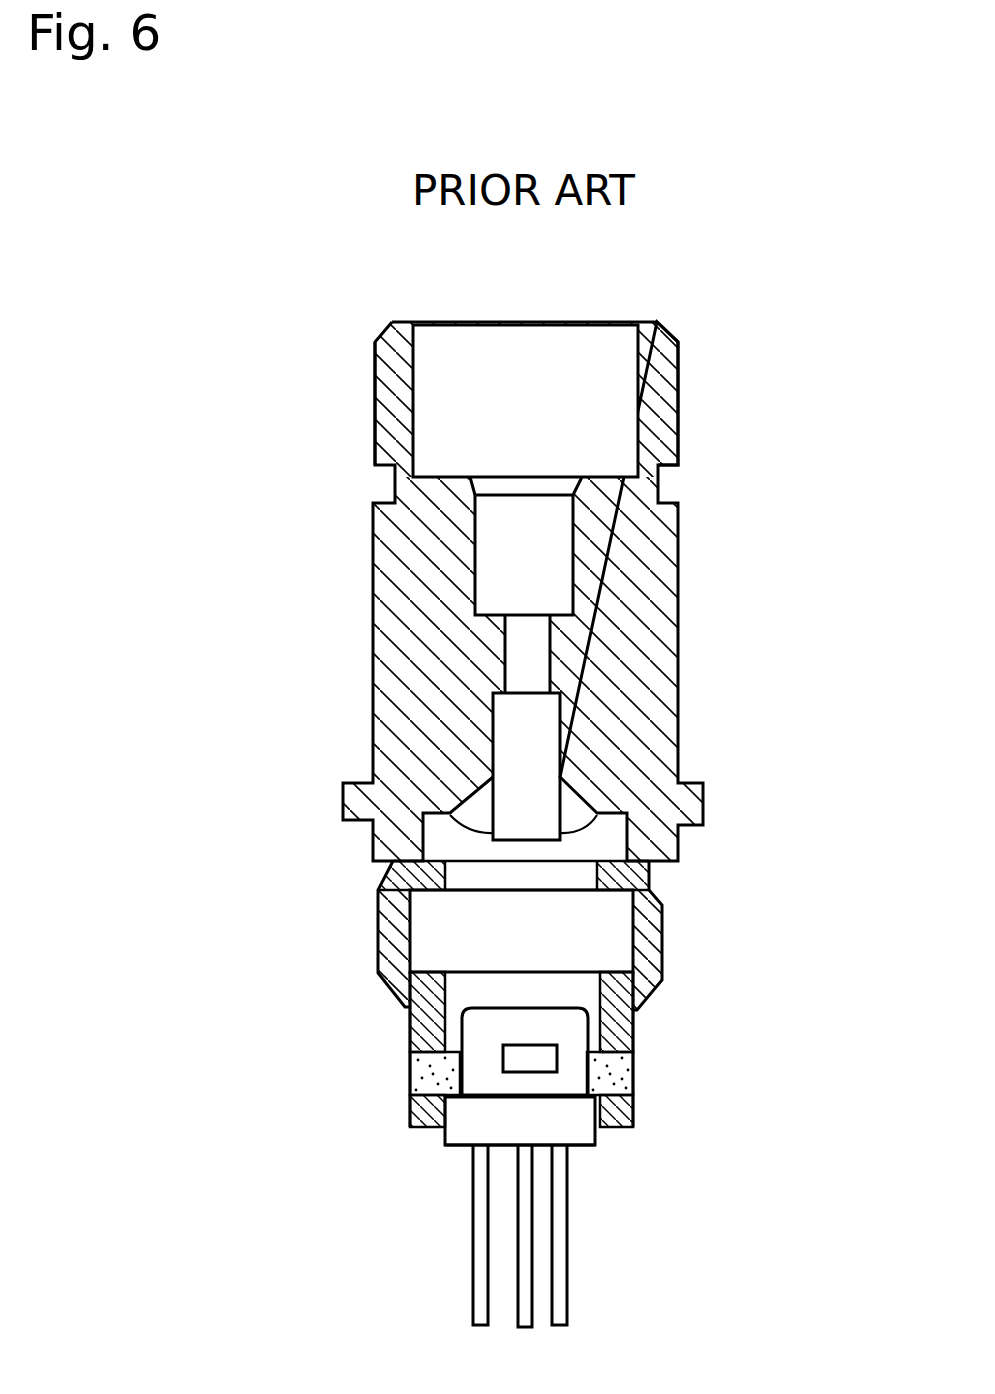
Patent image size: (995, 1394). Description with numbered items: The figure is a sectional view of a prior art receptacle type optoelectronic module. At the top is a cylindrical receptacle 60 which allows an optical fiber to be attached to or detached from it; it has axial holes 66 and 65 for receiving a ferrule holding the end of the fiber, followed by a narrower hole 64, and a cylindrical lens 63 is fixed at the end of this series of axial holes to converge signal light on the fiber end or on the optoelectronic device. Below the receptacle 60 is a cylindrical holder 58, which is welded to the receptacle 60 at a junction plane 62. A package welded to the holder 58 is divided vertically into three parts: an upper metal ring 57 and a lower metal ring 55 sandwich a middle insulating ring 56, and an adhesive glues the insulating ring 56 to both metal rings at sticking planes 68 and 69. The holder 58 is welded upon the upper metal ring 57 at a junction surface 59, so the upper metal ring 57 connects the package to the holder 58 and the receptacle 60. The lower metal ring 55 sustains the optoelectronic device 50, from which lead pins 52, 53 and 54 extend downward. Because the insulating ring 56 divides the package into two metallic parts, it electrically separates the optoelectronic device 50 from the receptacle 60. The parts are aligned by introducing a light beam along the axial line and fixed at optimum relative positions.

The optoelectronic device 50 is at (483, 1120).
The lead pin 52 is at (480, 1315).
The lead pin 53 is at (525, 1308).
The lead pin 54 is at (563, 1285).
The lower metal ring 55 is at (597, 1128).
The insulating ring 56 is at (603, 1075).
The upper metal ring 57 is at (617, 1028).
The cylindrical holder 58 is at (378, 932).
The junction surface 59 is at (405, 1005).
The cylindrical receptacle 60 is at (397, 663).
The junction plane 62 is at (393, 866).
The cylindrical lens 63 is at (527, 770).
The narrower hole 64 is at (540, 665).
The axial hole 65 is at (545, 558).
The axial hole 66 is at (552, 417).
The sticking plane 68 is at (410, 1102).
The sticking plane 69 is at (410, 1058).